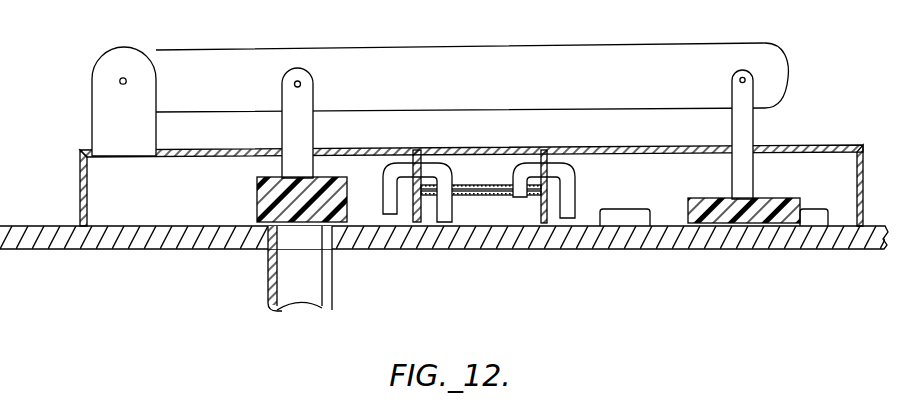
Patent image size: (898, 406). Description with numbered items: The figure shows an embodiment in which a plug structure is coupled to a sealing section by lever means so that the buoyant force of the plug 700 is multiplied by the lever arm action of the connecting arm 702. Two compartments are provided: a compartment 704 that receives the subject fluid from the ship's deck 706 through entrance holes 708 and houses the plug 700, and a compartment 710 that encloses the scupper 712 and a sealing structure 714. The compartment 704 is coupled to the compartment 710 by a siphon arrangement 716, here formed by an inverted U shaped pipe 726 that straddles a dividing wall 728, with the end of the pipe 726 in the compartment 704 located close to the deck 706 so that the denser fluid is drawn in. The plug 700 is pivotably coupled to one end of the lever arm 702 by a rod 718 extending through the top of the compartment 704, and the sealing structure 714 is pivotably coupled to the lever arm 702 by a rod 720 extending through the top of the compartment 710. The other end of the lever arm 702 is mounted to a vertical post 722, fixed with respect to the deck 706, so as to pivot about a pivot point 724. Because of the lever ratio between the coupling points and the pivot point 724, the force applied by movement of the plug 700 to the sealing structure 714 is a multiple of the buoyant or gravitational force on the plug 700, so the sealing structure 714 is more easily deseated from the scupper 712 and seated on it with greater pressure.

The plug 700 is at (773, 199).
The connecting arm 702 is at (523, 50).
The compartment 704 is at (654, 187).
The ship's deck 706 is at (757, 235).
The entrance holes 708 is at (635, 218).
The compartment 710 is at (147, 205).
The scupper 712 is at (292, 320).
The sealing structure 714 is at (257, 200).
The siphon arrangement 716 is at (413, 145).
The rod 718 is at (747, 127).
The rod 720 is at (305, 128).
The vertical post 722 is at (92, 122).
The pivot point 724 is at (118, 81).
The inverted U shaped pipe 726 is at (384, 190).
The dividing wall 728 is at (412, 220).